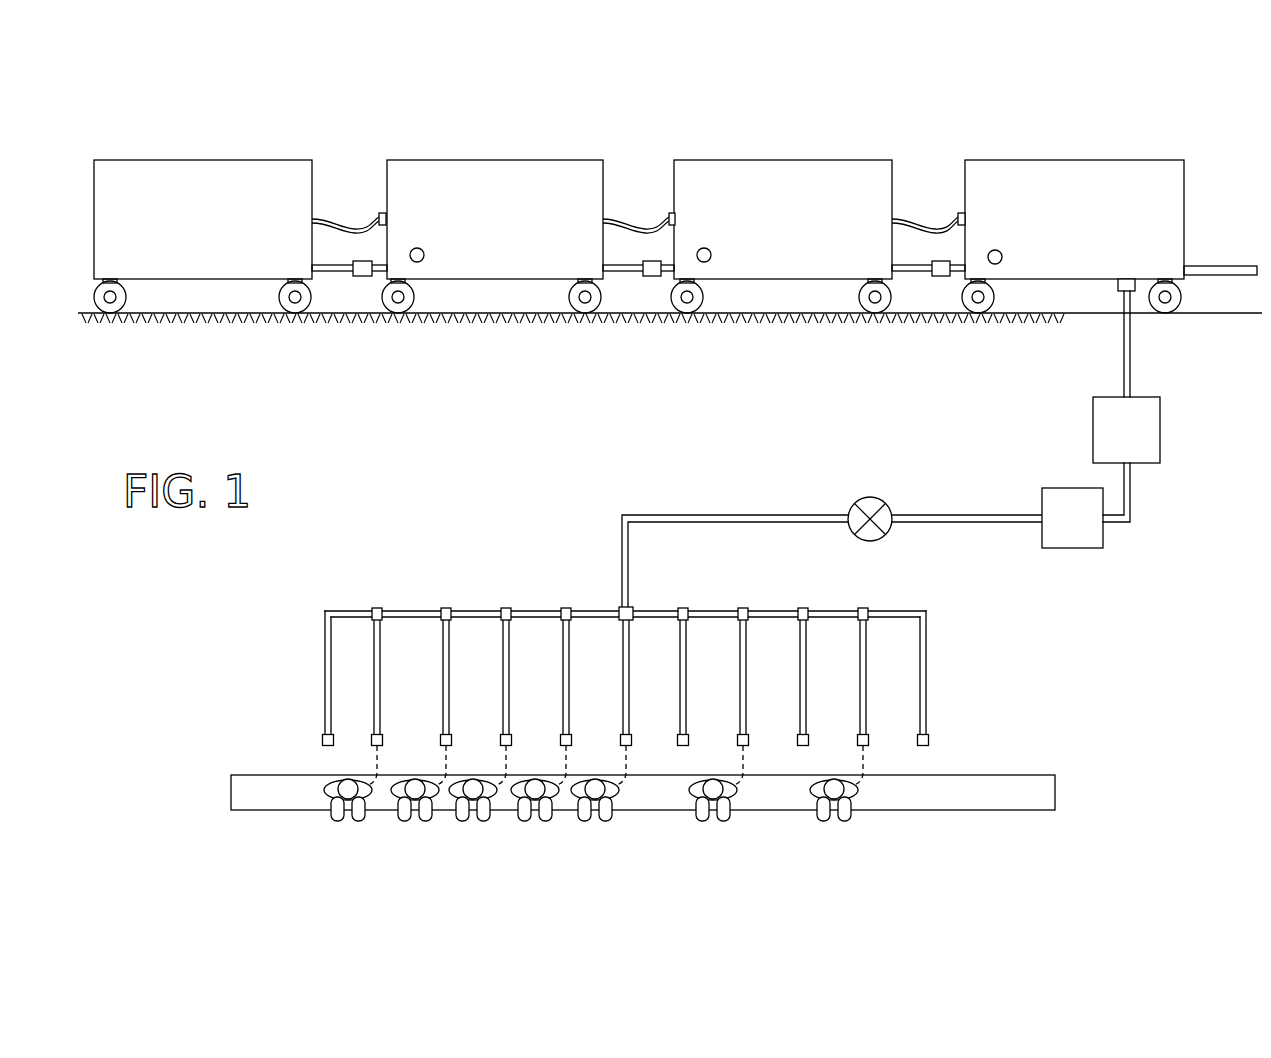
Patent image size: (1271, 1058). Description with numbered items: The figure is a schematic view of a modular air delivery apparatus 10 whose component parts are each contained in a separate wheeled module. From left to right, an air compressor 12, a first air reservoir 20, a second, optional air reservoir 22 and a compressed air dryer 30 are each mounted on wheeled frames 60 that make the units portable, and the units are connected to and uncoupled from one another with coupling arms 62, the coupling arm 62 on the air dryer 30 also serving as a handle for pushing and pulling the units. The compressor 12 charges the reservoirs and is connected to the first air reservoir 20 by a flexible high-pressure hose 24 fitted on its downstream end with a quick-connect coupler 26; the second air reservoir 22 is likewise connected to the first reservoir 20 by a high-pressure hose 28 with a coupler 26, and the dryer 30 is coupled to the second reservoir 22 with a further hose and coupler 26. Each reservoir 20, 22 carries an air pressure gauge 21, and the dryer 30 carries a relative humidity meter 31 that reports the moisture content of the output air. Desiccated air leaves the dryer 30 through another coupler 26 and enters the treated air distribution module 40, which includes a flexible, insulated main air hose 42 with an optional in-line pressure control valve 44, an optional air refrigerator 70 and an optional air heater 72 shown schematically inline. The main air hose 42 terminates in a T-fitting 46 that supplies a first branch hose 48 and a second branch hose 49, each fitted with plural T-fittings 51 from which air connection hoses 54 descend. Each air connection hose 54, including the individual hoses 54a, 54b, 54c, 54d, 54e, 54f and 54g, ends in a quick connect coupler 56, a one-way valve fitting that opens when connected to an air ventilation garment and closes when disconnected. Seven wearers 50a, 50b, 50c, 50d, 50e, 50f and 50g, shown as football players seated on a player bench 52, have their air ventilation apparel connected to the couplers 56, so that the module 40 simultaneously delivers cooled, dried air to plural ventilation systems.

The air delivery apparatus 10 is at (1068, 115).
The air compressor 12 is at (164, 150).
The first air reservoir 20 is at (512, 149).
The air pressure gauge 21 is at (424, 254).
The second air reservoir 22 is at (792, 149).
The flexible high-pressure hose 24 is at (337, 216).
The quick-connect coupler 26 is at (381, 213).
The high-pressure hose 28 is at (626, 218).
The air dryer 30 is at (1128, 149).
The relative humidity meter 31 is at (1002, 256).
The treated air distribution module 40 is at (684, 505).
The main air hose 42 is at (980, 515).
The in-line pressure control valve 44 is at (866, 497).
The T-fitting 46 is at (620, 608).
The first branch hose 48 is at (411, 611).
The second branch hose 49 is at (776, 611).
The wearer 50a is at (340, 821).
The wearer 50b is at (407, 821).
The wearer 50c is at (465, 821).
The wearer 50d is at (527, 821).
The wearer 50e is at (587, 821).
The wearer 50f is at (705, 821).
The wearer 50g is at (826, 821).
The T-fitting 51 is at (375, 608).
The player bench 52 is at (918, 798).
The air connection hose 54 is at (323, 660).
The drop pipe 54a is at (381, 672).
The drop pipe 54b is at (450, 672).
The drop pipe 54c is at (510, 672).
The drop pipe 54d is at (570, 672).
The drop pipe 54e is at (630, 672).
The drop pipe 54f is at (747, 672).
The drop pipe 54g is at (867, 672).
The quick connect coupler 56 is at (322, 739).
The wheeled frame 60 is at (121, 347).
The coupling arm 62 is at (331, 272).
The air refrigerator 70 is at (1093, 416).
The air heater 72 is at (1062, 488).